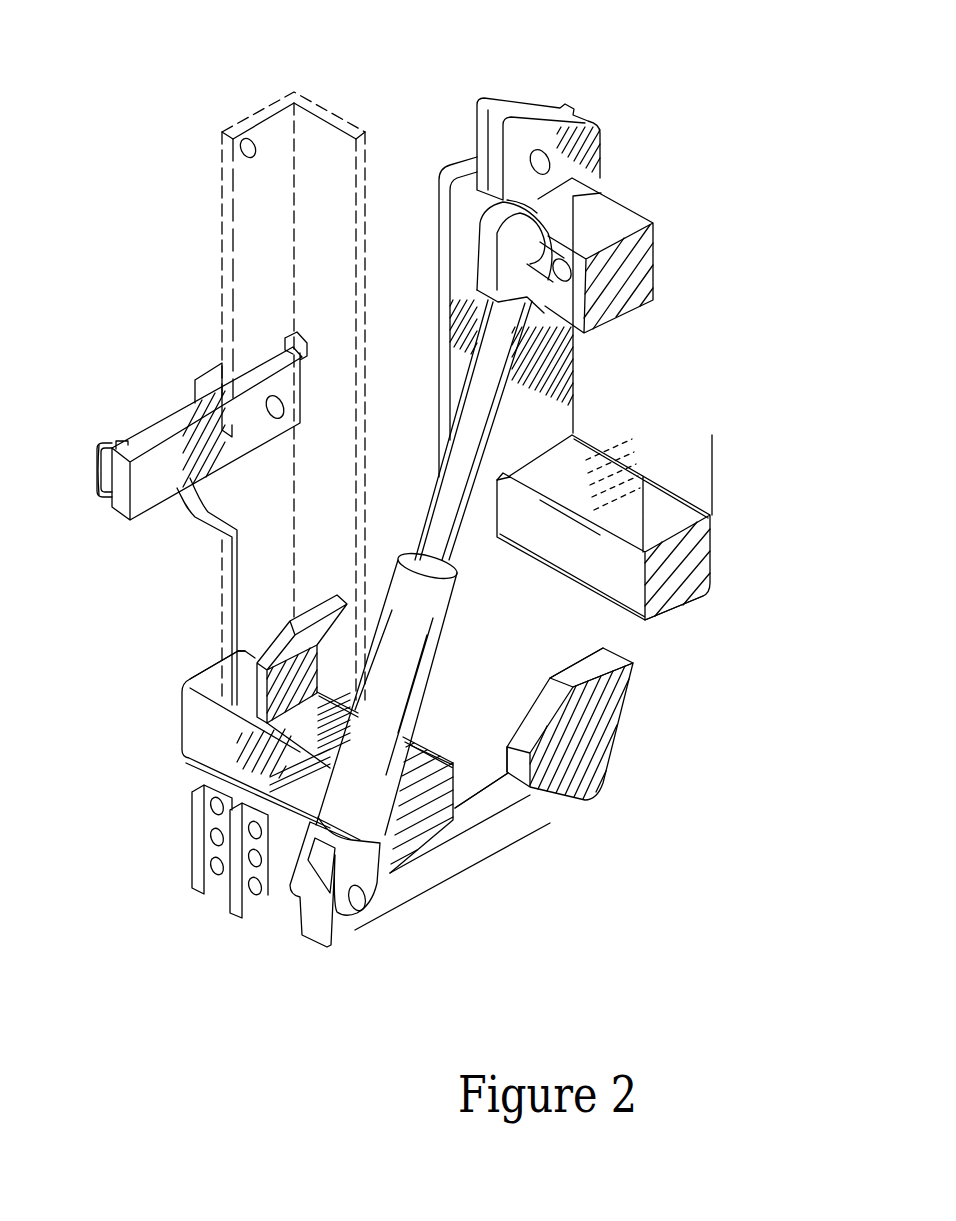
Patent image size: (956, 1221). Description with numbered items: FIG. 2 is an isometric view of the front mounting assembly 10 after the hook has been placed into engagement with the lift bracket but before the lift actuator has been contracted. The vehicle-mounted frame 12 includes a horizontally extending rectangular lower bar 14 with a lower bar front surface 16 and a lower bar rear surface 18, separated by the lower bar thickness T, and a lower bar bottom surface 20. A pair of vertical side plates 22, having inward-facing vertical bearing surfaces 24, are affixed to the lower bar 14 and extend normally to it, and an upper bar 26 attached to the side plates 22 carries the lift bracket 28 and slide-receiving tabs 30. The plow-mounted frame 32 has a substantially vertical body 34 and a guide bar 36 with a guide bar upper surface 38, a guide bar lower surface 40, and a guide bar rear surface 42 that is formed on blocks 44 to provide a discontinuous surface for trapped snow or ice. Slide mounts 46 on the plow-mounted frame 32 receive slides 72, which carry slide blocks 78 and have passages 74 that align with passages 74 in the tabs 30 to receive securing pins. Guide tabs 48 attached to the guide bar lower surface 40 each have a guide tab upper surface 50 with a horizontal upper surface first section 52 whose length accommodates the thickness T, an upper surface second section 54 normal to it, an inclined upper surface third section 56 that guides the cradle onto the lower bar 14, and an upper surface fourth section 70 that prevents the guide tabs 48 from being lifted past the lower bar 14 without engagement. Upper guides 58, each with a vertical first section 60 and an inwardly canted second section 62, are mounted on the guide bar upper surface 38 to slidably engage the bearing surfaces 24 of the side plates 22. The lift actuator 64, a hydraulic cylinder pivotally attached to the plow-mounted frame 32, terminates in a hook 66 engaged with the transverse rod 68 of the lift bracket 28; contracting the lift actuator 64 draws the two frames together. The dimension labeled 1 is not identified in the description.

The front mounting assembly 10 is at (232, 60).
The vehicle-mounted frame 12 is at (430, 130).
The lower bar 14 is at (592, 540).
The lower bar front surface 16 is at (623, 577).
The lower bar rear surface 18 is at (713, 553).
The lower bar bottom surface 20 is at (688, 607).
The side plates 22 is at (438, 378).
The inward-facing vertical bearing surfaces 24 is at (497, 478).
The upper bar 26 is at (637, 227).
The lift bracket 28 is at (478, 213).
The slide-receiving tabs 30 is at (480, 100).
The plow-mounted frame 32 is at (185, 240).
The substantially vertical body 34 is at (222, 305).
The guide bar 36 is at (198, 770).
The guide bar upper surface 38 is at (300, 730).
The guide bar lower surface 40 is at (428, 850).
The guide bar rear surface 42 is at (455, 767).
The blocks 44 is at (430, 750).
The slide mounts 46 is at (207, 378).
The guide tabs 48 is at (497, 858).
The guide tab upper surface 50 is at (517, 723).
The upper surface first section 52 is at (497, 812).
The upper surface second section 54 is at (567, 808).
The upper surface third section 56 is at (577, 700).
The upper guides 58 is at (240, 697).
The first section 60 is at (245, 685).
The second section 62 is at (280, 627).
The lift actuator 64 is at (325, 801).
The hook 66 is at (495, 257).
The transverse rod 68 is at (566, 262).
The upper surface fourth section 70 is at (603, 648).
The slides 72 is at (110, 515).
The passages 74 is at (275, 418).
The slide blocks 78 is at (128, 448).
The lower bar thickness T is at (713, 468).
The length 1 is at (462, 796).